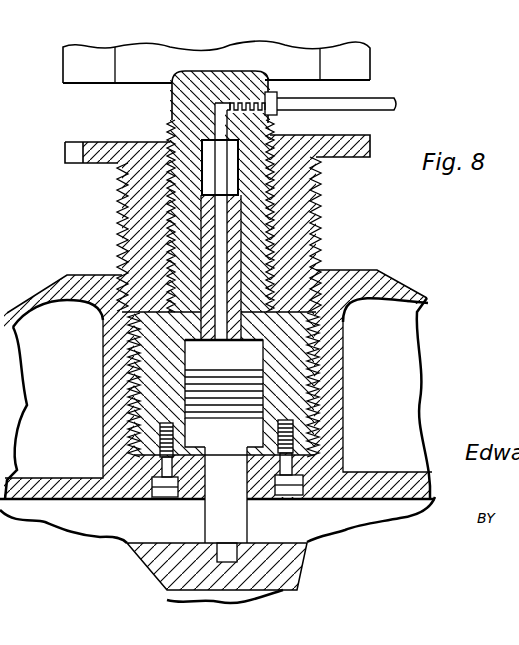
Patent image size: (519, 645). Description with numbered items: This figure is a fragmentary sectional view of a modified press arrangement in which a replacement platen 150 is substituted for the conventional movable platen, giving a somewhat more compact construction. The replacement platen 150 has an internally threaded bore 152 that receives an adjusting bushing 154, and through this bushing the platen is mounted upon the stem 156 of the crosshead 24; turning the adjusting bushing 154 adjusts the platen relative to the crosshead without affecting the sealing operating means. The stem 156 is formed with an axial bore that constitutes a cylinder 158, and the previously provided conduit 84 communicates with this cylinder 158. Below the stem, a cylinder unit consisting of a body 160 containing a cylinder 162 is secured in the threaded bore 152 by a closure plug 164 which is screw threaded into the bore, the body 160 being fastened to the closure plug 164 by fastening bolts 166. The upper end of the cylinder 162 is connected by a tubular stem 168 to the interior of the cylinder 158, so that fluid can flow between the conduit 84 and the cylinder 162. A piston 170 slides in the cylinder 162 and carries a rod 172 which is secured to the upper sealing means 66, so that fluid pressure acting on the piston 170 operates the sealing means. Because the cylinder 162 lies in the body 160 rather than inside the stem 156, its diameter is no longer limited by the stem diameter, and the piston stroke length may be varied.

The crosshead 24 is at (255, 46).
The conduit 84 is at (363, 103).
The stem 156 is at (185, 98).
The adjusting bushing 154 is at (278, 147).
The cylinder 158 is at (238, 157).
The tubular stem 168 is at (233, 263).
The replacement platen 150 is at (390, 288).
The internally threaded bore 152 is at (130, 357).
The body 160 is at (295, 392).
The cylinder 162 is at (263, 360).
The piston 170 is at (200, 387).
The fastening bolts 166 is at (290, 468).
The closure plug 164 is at (143, 497).
The rod 172 is at (235, 511).
The upper sealing means 66 is at (167, 570).